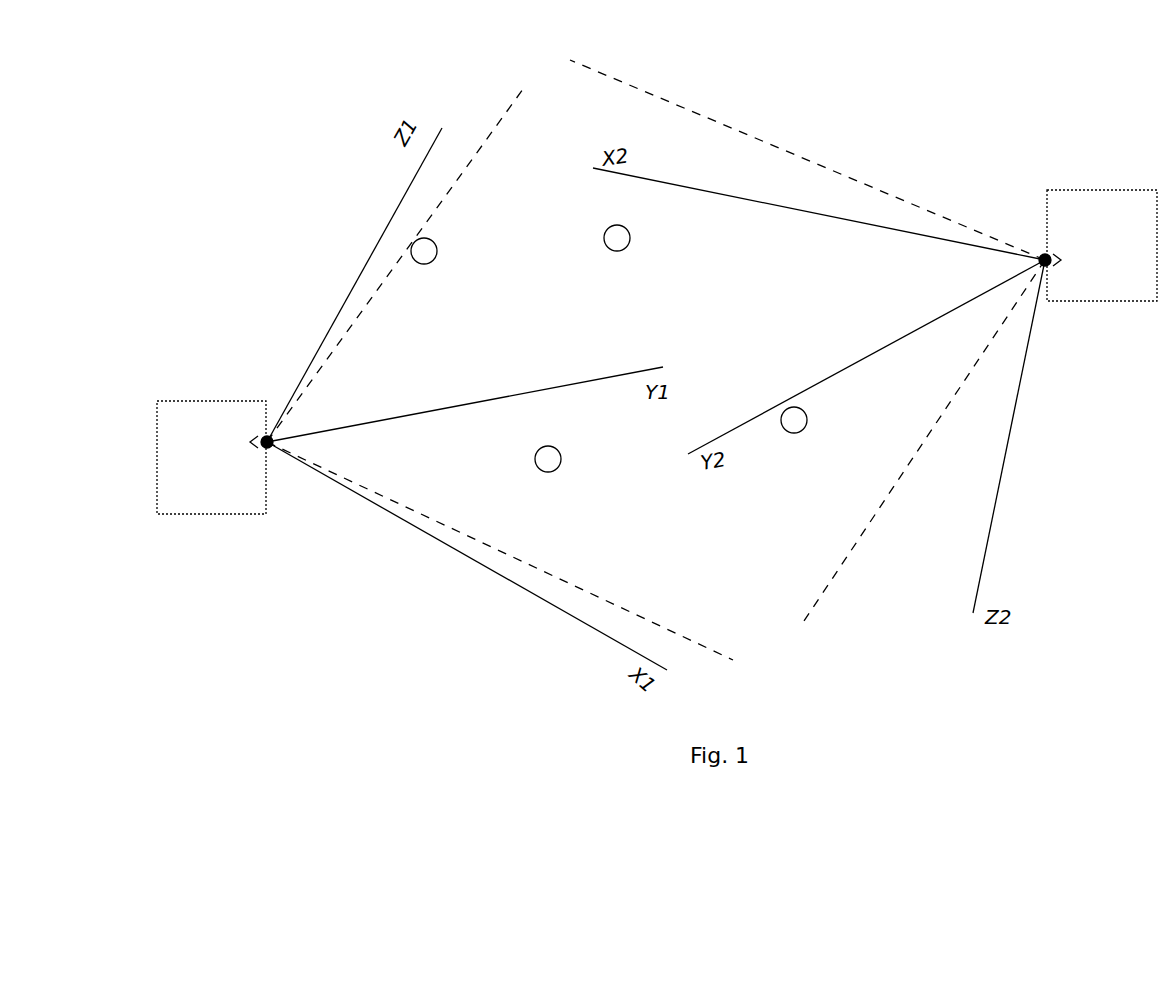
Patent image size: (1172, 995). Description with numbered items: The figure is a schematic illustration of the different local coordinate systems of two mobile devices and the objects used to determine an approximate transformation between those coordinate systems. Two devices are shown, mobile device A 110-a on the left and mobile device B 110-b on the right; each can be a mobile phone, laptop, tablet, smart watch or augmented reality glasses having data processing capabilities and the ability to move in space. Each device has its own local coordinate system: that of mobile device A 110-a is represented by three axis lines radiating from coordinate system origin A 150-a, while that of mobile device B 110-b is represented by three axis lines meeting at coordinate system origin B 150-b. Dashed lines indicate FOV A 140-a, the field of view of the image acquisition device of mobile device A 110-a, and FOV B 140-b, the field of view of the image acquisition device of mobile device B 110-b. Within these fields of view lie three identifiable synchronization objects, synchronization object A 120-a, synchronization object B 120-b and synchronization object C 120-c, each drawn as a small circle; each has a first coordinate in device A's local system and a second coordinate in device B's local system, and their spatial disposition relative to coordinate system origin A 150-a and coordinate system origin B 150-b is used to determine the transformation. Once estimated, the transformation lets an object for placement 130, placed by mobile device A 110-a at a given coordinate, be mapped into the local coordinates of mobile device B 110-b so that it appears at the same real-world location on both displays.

The mobile device A 110-a is at (215, 457).
The mobile device B 110-b is at (1098, 245).
The synchronization object A 120-a is at (636, 514).
The synchronization object B 120-b is at (881, 474).
The synchronization object C 120-c is at (511, 306).
The object for placement 130 is at (696, 292).
The FOV A 140-a is at (515, 100).
The FOV B 140-b is at (652, 93).
The coordinate system origin A 150-a is at (265, 403).
The coordinate system origin B 150-b is at (1044, 254).